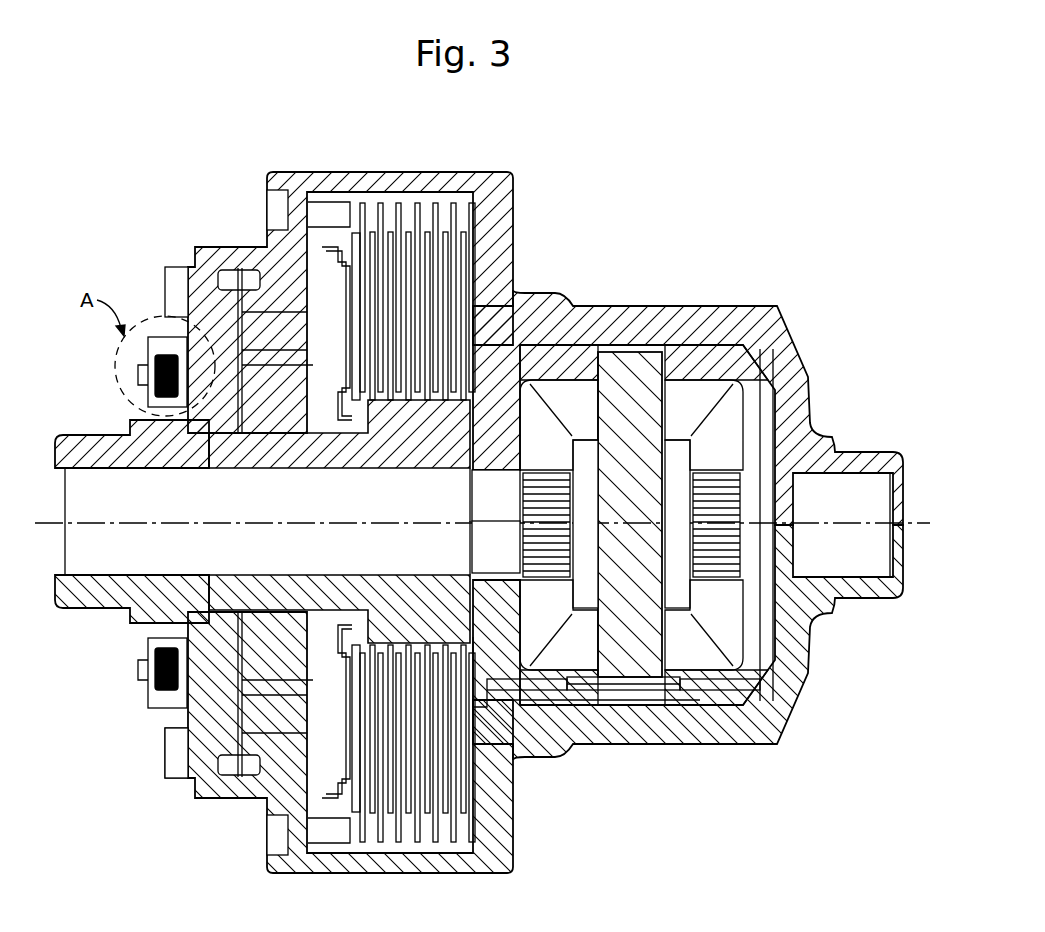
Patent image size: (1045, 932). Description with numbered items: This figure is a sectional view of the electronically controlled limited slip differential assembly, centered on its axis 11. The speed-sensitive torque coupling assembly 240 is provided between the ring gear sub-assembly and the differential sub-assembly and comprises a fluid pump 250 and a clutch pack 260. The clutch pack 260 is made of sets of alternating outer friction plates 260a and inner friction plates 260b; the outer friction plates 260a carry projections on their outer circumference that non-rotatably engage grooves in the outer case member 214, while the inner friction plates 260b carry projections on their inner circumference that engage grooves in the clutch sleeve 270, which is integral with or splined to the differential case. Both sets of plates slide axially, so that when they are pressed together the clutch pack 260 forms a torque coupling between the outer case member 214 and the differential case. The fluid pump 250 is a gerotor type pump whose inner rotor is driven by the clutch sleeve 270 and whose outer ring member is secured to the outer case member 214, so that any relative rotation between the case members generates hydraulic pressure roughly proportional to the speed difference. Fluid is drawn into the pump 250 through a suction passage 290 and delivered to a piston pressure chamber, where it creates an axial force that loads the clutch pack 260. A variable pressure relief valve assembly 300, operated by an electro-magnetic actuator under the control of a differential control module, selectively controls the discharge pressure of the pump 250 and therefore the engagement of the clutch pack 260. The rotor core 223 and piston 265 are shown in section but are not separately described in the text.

The axis 11 is at (140, 523).
The outer case member 214 is at (323, 172).
The rotor core 223 is at (650, 472).
The speed-sensitive torque coupling assembly 240 is at (473, 486).
The fluid pump 250 is at (310, 442).
The clutch pack 260 is at (473, 521).
The outer friction plates 260a is at (458, 215).
The inner friction plates 260b is at (465, 442).
The piston 265 is at (346, 400).
The clutch sleeve 270 is at (442, 616).
The suction passage 290 is at (170, 748).
The variable pressure relief valve assembly 300 is at (119, 385).